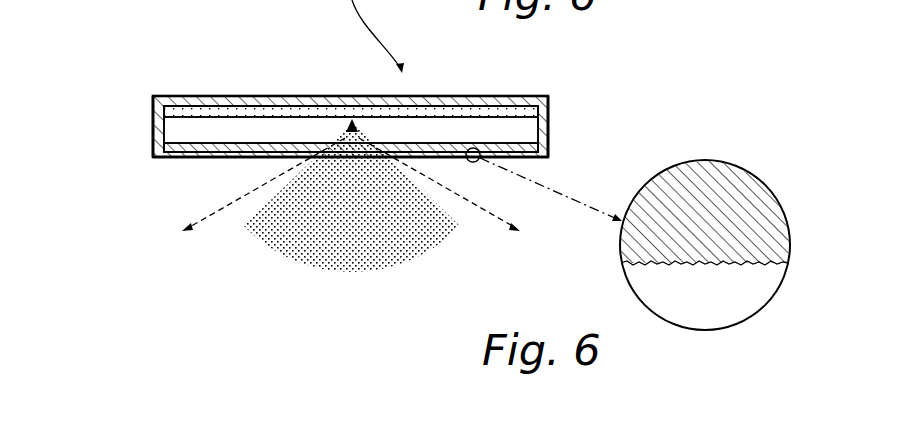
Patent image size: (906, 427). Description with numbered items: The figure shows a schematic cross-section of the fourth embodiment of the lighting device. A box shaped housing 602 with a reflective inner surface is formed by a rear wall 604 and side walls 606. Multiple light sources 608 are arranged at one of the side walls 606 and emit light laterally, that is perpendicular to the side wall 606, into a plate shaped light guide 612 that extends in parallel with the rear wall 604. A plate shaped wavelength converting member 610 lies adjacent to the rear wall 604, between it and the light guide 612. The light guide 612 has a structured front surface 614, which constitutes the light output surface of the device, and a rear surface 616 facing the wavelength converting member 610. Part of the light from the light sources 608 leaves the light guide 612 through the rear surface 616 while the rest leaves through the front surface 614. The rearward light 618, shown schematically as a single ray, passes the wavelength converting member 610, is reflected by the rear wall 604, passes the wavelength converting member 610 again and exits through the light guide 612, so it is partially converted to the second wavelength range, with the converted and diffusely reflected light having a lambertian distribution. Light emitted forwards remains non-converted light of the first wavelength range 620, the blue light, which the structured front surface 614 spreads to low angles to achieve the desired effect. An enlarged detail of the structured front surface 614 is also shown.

The housing 602 is at (523, 97).
The rear wall 604 is at (481, 97).
The side walls 606 is at (155, 134).
The light sources 608 is at (168, 158).
The wavelength converting member 610 is at (232, 106).
The light guide 612 is at (202, 158).
The front surface 614 is at (225, 158).
The rear surface 616 is at (262, 143).
The light emitted rearwards 618 is at (396, 97).
The light of the first wavelength range 620 is at (206, 228).